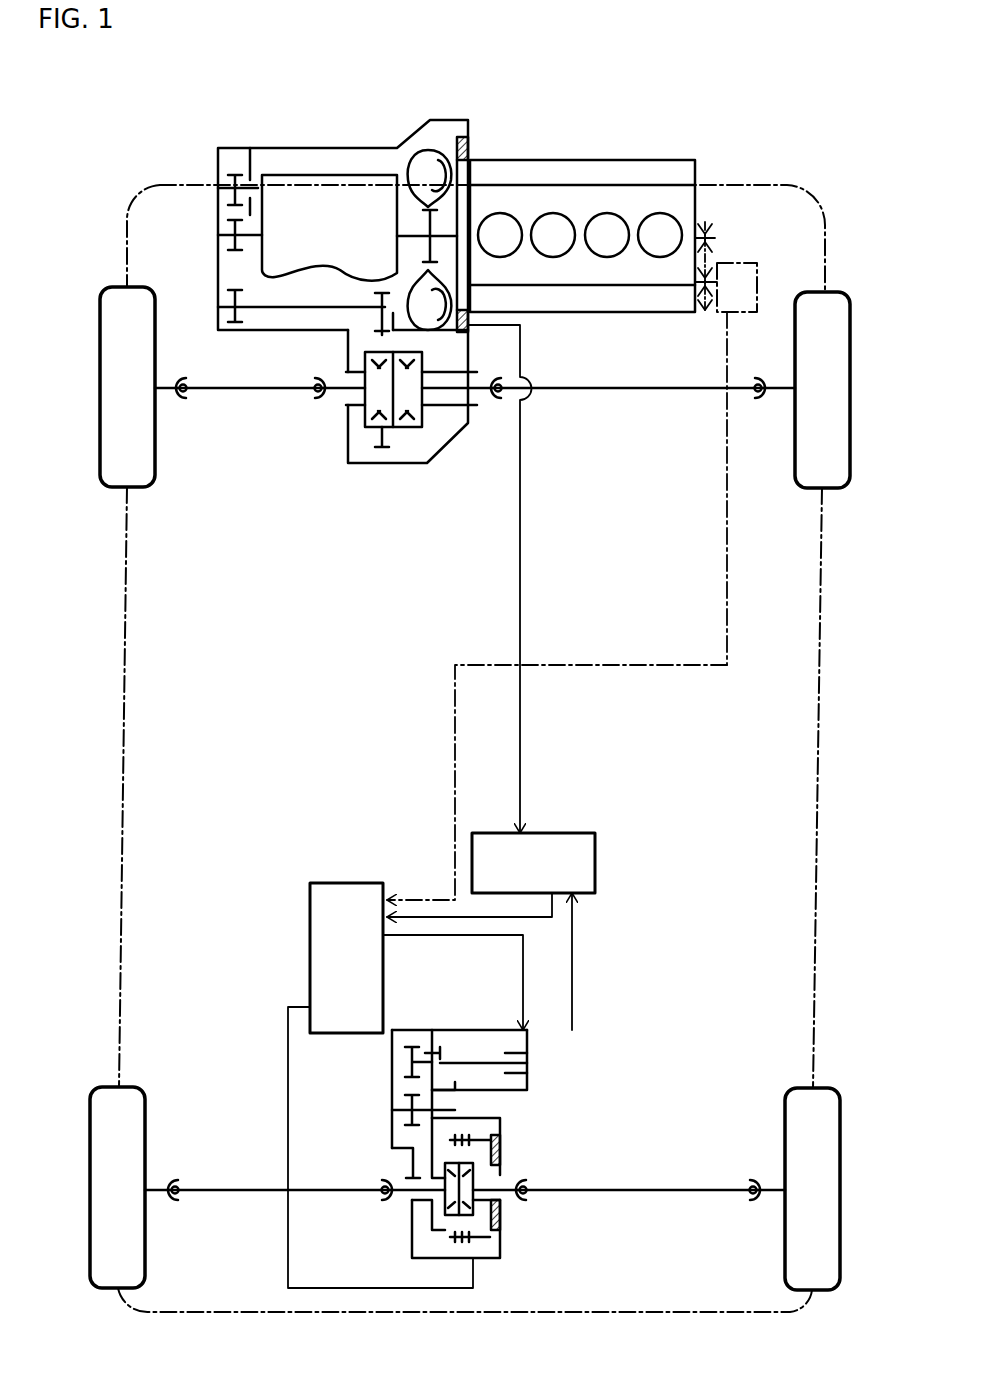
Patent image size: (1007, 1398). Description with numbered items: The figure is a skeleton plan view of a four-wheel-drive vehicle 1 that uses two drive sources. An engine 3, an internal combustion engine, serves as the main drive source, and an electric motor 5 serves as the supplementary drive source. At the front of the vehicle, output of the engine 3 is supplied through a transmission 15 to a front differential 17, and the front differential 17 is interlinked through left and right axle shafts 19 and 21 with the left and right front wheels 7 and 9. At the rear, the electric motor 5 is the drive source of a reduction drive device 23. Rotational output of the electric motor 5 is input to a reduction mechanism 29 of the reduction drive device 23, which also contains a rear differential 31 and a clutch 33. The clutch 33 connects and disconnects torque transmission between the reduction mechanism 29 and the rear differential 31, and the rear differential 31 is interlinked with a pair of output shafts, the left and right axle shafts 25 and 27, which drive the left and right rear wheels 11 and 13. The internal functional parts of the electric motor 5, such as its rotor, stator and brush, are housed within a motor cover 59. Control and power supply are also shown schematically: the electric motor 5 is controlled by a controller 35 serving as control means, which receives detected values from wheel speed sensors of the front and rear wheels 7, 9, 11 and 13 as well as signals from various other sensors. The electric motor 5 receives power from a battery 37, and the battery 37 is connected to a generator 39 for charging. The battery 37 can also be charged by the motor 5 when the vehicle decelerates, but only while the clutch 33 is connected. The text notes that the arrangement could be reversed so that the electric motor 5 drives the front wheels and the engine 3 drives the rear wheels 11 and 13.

The four-wheel-drive vehicle 1 is at (692, 150).
The engine 3 is at (566, 160).
The electric motor 5 is at (532, 1063).
The left front wheel 7 is at (140, 287).
The right front wheel 9 is at (812, 292).
The left rear wheel 11 is at (136, 1087).
The right rear wheel 13 is at (796, 1088).
The transmission 15 is at (285, 145).
The front differential 17 is at (360, 445).
The left axle shaft 19 is at (258, 388).
The right axle shaft 21 is at (600, 388).
The reduction drive device 23 is at (448, 1028).
The left axle shaft 25 is at (242, 1190).
The right axle shaft 27 is at (652, 1190).
The reduction mechanism 29 is at (410, 1048).
The rear differential 31 is at (505, 1215).
The clutch 33 is at (478, 1124).
The controller 35 is at (310, 938).
The battery 37 is at (600, 858).
The generator 39 is at (737, 262).
The motor cover 59 is at (518, 1090).